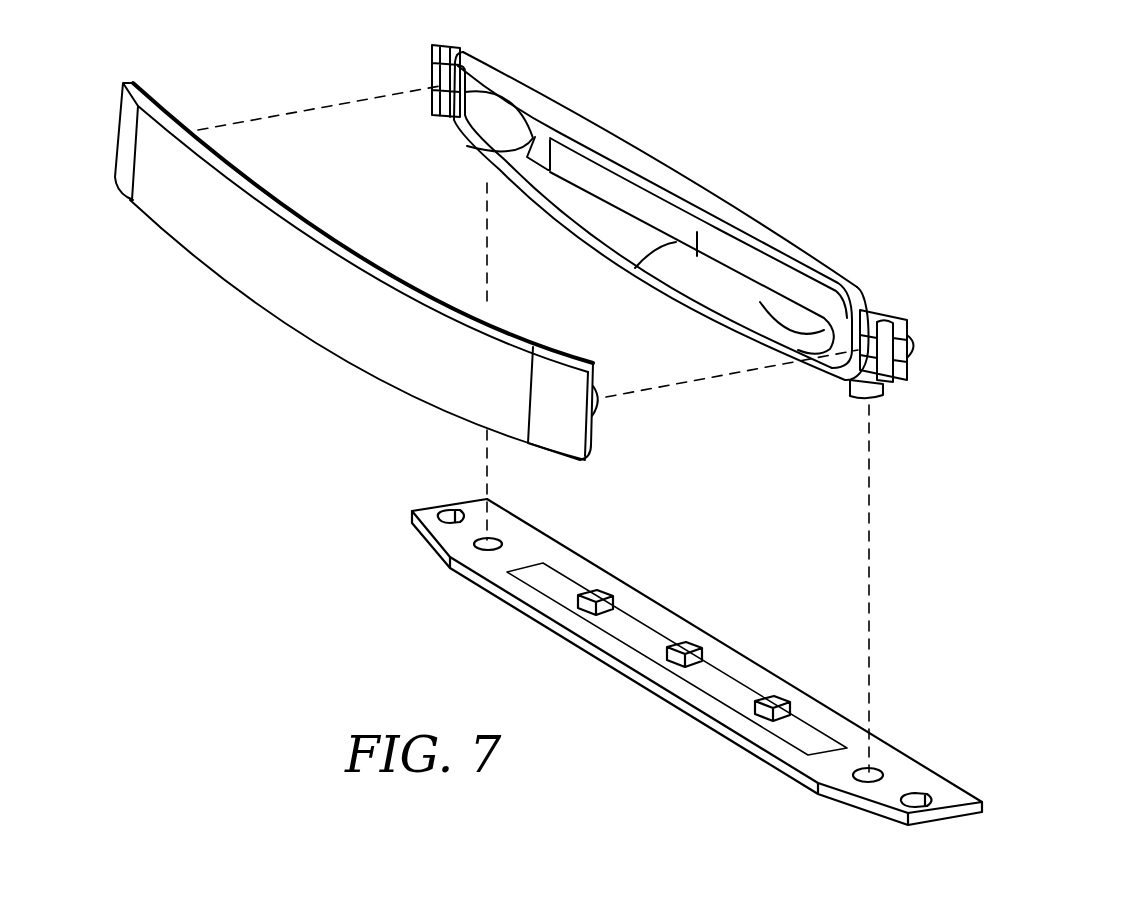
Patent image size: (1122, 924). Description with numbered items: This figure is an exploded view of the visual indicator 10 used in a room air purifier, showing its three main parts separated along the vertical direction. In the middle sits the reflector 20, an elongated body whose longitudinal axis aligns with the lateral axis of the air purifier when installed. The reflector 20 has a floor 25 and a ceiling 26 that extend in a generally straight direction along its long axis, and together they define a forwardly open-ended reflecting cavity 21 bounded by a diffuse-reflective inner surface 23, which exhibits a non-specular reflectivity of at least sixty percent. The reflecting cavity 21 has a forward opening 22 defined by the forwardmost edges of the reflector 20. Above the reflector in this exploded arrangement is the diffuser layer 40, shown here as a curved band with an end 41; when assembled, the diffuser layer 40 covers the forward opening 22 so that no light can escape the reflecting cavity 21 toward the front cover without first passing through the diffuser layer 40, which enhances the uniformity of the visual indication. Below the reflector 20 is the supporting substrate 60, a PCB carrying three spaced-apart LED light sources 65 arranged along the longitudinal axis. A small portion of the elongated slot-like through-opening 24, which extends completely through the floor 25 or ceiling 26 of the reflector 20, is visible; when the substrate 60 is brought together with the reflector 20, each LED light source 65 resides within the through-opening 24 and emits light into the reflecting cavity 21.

The visual indicator 10 is at (826, 88).
The reflector 20 is at (648, 108).
The reflecting cavity 21 is at (558, 198).
The forward opening 22 is at (662, 268).
The inner surface 23 is at (703, 283).
The through-opening 24 is at (790, 317).
The floor 25 is at (472, 172).
The ceiling 26 is at (568, 123).
The diffuser layer 40 is at (223, 302).
The strap end 41 is at (122, 138).
The supporting substrate 60 is at (462, 625).
The LED light source 65 is at (771, 697).